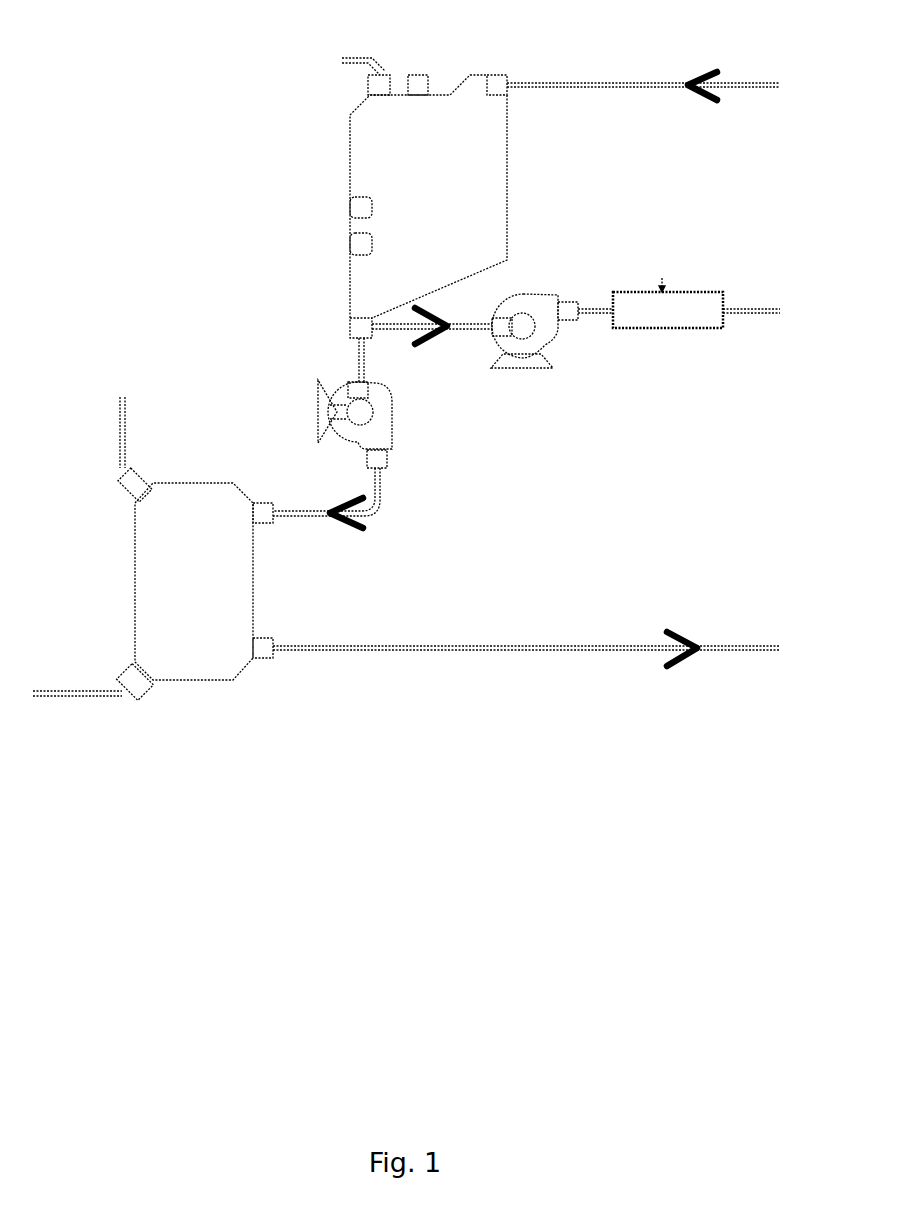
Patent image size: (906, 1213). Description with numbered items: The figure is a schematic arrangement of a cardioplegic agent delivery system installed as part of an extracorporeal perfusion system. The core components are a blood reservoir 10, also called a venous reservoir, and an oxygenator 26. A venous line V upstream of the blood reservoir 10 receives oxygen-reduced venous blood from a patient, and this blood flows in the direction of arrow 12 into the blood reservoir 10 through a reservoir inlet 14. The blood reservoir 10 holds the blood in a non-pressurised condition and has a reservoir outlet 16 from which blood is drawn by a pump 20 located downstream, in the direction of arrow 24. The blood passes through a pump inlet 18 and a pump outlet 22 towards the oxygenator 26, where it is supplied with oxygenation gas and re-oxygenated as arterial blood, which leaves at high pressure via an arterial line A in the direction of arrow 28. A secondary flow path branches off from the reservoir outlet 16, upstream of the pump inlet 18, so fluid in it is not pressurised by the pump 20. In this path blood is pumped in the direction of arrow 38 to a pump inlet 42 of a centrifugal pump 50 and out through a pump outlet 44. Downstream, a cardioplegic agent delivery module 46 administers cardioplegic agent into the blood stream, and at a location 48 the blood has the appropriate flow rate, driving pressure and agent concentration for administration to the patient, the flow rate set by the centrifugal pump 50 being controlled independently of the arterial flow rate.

The blood reservoir 10 is at (413, 172).
The arrow 12 is at (700, 80).
The reservoir inlet 14 is at (494, 75).
The reservoir outlet 16 is at (348, 328).
The pump inlet 18 is at (372, 385).
The pump 20 is at (318, 412).
The pump outlet 22 is at (388, 460).
The arrow 24 is at (344, 530).
The oxygenator 26 is at (178, 594).
The arrow 28 is at (687, 643).
The arrow 38 is at (440, 320).
The pump inlet 42 is at (495, 345).
The pump outlet 44 is at (575, 302).
The cardioplegic agent delivery module 46 is at (711, 292).
The location 48 is at (762, 308).
The centrifugal pump 50 is at (549, 293).
The venous line V is at (586, 82).
The arterial line A is at (455, 645).